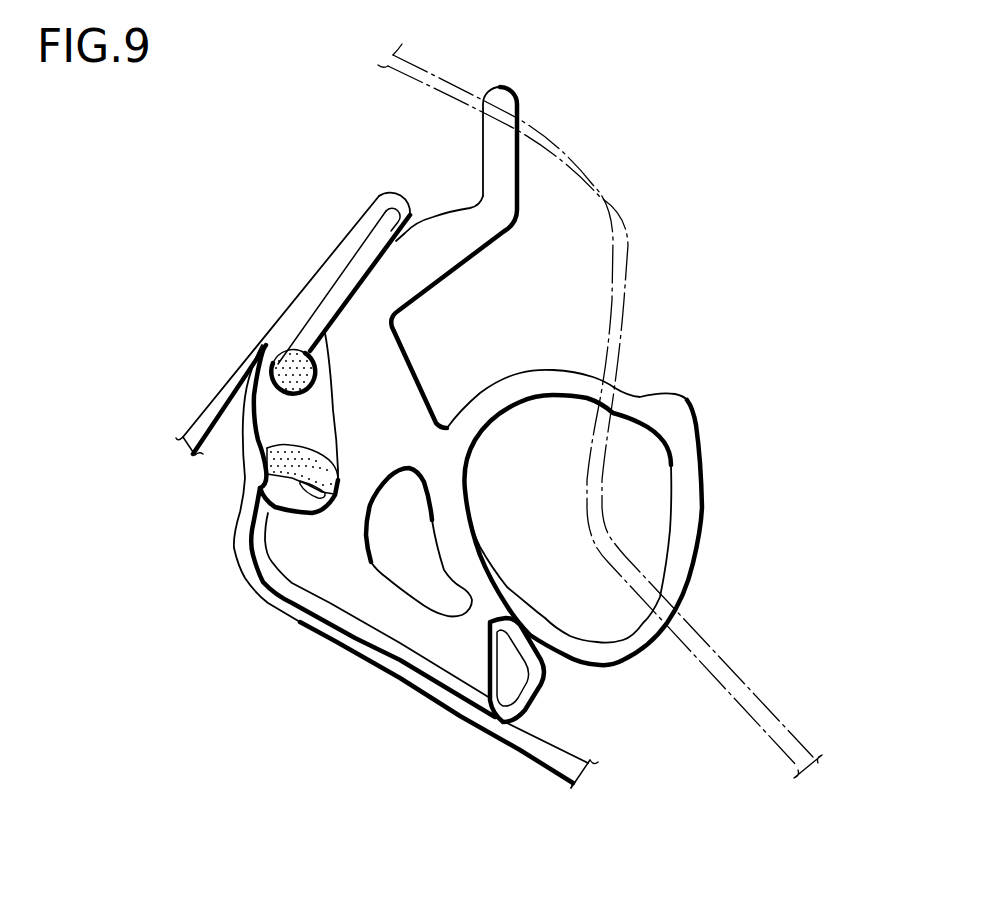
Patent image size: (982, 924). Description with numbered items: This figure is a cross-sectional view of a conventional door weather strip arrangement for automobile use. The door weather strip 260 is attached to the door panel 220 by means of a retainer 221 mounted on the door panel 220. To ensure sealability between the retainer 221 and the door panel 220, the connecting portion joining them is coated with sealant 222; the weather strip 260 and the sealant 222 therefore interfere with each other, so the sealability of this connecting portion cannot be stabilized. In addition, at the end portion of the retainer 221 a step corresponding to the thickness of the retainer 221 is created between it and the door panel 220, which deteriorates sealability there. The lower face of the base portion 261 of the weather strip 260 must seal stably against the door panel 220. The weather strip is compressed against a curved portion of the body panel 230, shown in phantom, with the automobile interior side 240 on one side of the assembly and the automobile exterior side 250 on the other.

The door panel 220 is at (519, 735).
The retainer 221 is at (522, 708).
The sealant 222 is at (285, 365).
The body panel 230 is at (628, 285).
The automobile interior side 240 is at (862, 627).
The automobile exterior side 250 is at (149, 627).
The door weather strip 260 is at (721, 412).
The base portion 261 is at (387, 620).